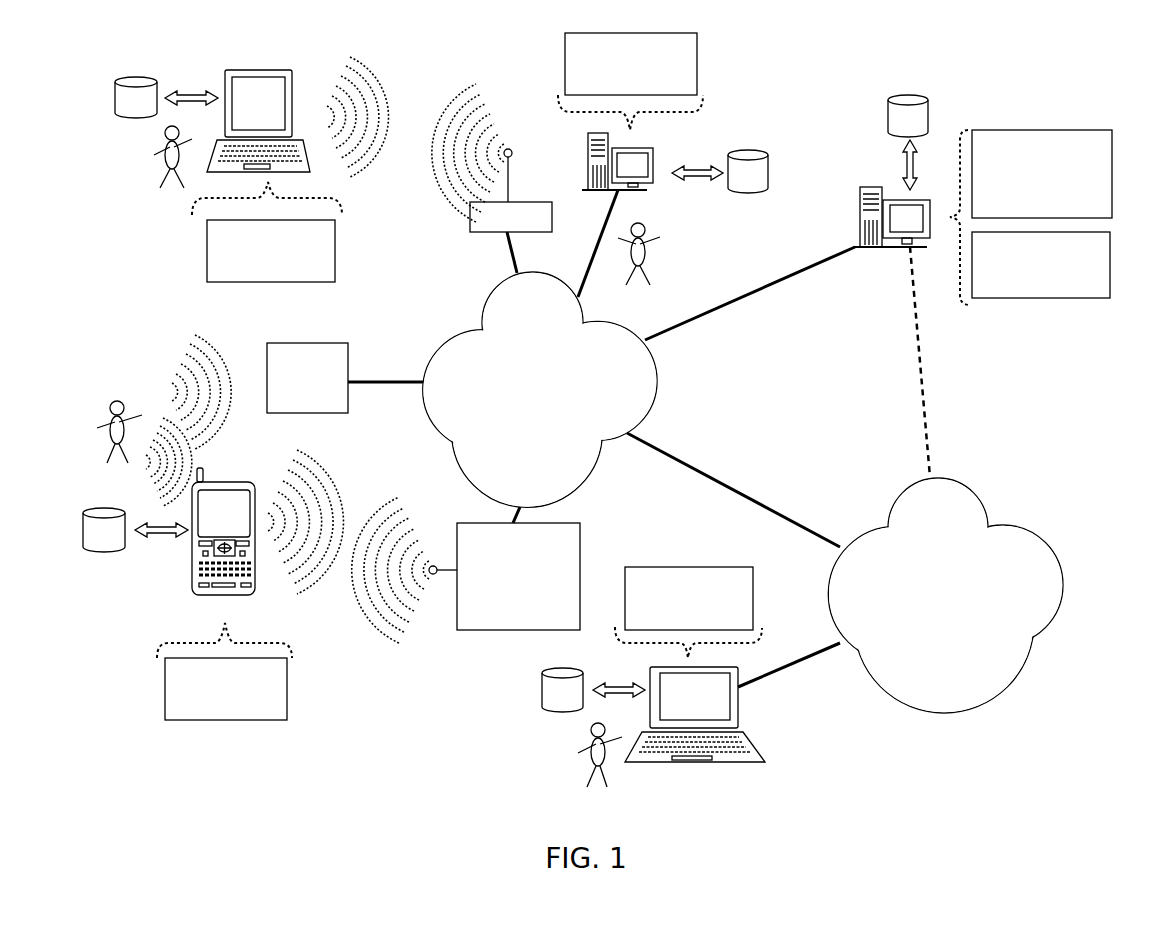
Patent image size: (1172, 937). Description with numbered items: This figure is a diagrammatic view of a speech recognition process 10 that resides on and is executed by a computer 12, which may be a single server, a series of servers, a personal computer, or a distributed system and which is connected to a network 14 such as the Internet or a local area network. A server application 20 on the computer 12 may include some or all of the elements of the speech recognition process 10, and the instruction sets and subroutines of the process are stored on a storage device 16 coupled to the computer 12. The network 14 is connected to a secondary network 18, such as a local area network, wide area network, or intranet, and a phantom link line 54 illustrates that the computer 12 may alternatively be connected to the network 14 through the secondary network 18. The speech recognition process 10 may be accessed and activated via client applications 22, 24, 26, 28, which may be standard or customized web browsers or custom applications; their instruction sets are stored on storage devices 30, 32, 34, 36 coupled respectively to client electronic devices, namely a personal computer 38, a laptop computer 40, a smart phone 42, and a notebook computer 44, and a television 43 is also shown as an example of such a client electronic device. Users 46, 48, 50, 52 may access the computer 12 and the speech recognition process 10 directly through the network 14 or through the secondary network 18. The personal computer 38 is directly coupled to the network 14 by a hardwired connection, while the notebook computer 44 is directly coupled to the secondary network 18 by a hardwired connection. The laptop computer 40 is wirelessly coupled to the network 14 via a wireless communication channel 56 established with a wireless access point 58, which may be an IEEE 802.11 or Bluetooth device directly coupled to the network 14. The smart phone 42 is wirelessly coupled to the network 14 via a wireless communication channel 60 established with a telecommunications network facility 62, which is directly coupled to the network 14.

The speech recognition process 10 is at (1112, 167).
The computer 12 is at (850, 202).
The network 14 is at (540, 389).
The storage device 16 is at (908, 116).
The secondary network 18 is at (945, 595).
The server application 20 is at (1110, 288).
The client application 22 is at (697, 78).
The client application 24 is at (335, 250).
The client application 26 is at (287, 680).
The client application 28 is at (753, 605).
The storage device 30 is at (748, 171).
The storage device 32 is at (136, 97).
The storage device 34 is at (104, 530).
The storage device 36 is at (562, 690).
The personal computer 38 is at (653, 162).
The laptop computer 40 is at (292, 90).
The smart phone 42 is at (255, 555).
The television 43 is at (348, 402).
The notebook computer 44 is at (738, 715).
The user 46 is at (660, 240).
The user 48 is at (142, 150).
The user 50 is at (97, 417).
The user 52 is at (568, 747).
The phantom link line 54 is at (918, 355).
The wireless communication channel 56 is at (422, 105).
The wireless access point 58 is at (470, 215).
The wireless communication channel 60 is at (362, 520).
The telecommunications network facility 62 is at (580, 530).